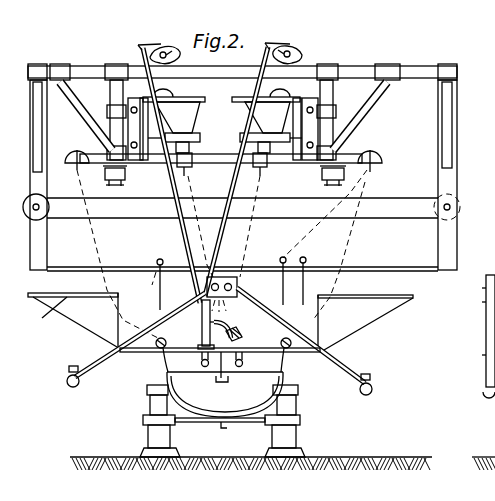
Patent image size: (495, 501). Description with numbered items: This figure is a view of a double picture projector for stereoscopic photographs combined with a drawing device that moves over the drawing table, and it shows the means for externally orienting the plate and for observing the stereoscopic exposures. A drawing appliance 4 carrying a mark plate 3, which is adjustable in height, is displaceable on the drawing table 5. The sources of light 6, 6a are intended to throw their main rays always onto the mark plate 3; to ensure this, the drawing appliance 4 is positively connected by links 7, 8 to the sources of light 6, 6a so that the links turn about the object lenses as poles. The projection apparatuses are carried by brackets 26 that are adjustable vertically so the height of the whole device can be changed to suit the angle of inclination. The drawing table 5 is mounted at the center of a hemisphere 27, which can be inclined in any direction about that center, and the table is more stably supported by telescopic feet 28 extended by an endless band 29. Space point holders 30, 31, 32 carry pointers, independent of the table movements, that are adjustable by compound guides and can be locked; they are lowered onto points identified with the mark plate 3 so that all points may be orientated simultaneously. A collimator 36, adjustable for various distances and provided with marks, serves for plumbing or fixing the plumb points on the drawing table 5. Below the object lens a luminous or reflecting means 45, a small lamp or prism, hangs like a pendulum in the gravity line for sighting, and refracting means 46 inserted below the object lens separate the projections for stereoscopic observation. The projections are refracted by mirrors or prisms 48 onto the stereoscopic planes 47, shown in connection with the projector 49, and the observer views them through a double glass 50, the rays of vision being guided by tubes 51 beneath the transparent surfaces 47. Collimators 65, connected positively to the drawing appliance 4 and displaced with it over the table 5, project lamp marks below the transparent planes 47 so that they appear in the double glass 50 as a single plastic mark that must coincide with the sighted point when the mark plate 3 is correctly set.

The mark plate 3 is at (225, 315).
The drawing appliance 4 is at (201, 325).
The drawing table 5 is at (126, 352).
The source of light 6 is at (173, 55).
The source of light 6a is at (303, 56).
The link 7 is at (181, 232).
The link 8 is at (218, 238).
The bracket 26 is at (449, 138).
The hemisphere 27 is at (296, 377).
The telescopic feet 28 is at (296, 439).
The endless band 29 is at (254, 422).
The space point holder 30 is at (155, 271).
The space point holder 31 is at (281, 266).
The space point holder 32 is at (306, 266).
The collimator 36 is at (239, 332).
The luminous or reflecting means 45 is at (186, 172).
The refracting means 46 is at (264, 166).
The stereoscopic plane 47 is at (60, 313).
The mirrors or prisms 48 is at (378, 154).
The projector 49 is at (186, 117).
The double glass 50 is at (237, 285).
The tube 51 is at (352, 372).
The collimator 65 is at (157, 348).